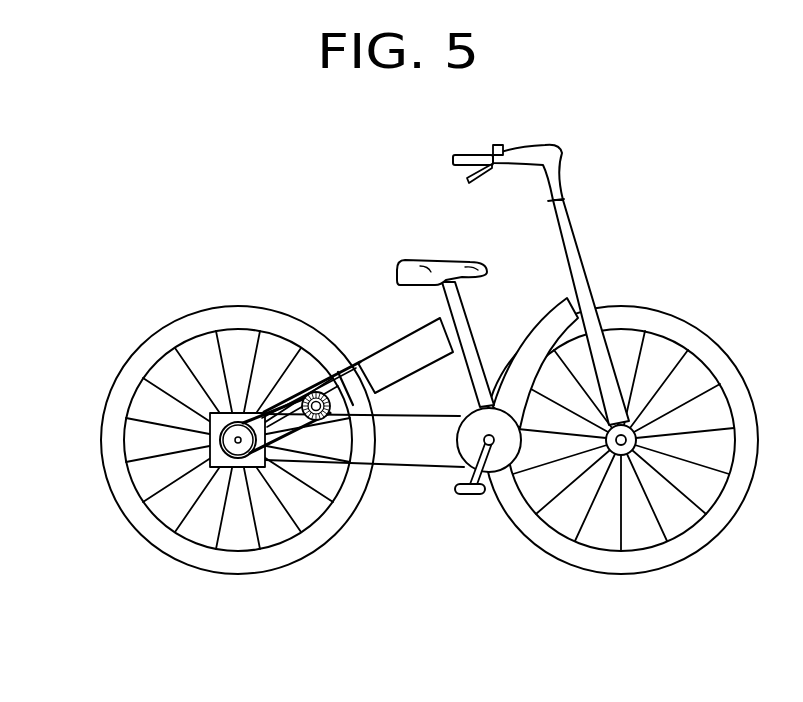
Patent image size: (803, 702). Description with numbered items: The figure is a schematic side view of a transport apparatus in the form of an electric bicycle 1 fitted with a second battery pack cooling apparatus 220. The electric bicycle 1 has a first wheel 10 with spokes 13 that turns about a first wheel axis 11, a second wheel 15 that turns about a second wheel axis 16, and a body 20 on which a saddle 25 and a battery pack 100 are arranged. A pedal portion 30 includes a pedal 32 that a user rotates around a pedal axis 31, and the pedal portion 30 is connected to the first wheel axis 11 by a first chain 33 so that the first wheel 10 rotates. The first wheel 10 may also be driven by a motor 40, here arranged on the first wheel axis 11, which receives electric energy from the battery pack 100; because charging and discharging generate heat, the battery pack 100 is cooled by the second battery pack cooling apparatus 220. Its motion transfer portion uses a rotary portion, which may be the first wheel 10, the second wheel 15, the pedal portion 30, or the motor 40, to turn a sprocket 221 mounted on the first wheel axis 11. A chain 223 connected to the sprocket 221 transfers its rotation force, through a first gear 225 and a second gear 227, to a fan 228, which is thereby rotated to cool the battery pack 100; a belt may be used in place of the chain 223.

The electric bicycle 1 is at (683, 136).
The first wheel 10 is at (128, 537).
The first wheel axis 11 is at (235, 445).
The spokes 13 is at (187, 372).
The second wheel 15 is at (638, 575).
The second wheel axis 16 is at (623, 442).
The body 20 is at (467, 340).
The saddle 25 is at (443, 263).
The pedal portion 30 is at (495, 521).
The pedal axis 31 is at (522, 537).
The pedal 32 is at (489, 476).
The first chain 33 is at (438, 468).
The motor 40 is at (208, 437).
The battery pack 100 is at (400, 355).
The second battery pack cooling apparatus 220 is at (275, 405).
The sprocket 221 is at (243, 455).
The chain 223 is at (264, 448).
The first gear 225 is at (327, 447).
The second gear 227 is at (318, 394).
The fan 228 is at (347, 422).